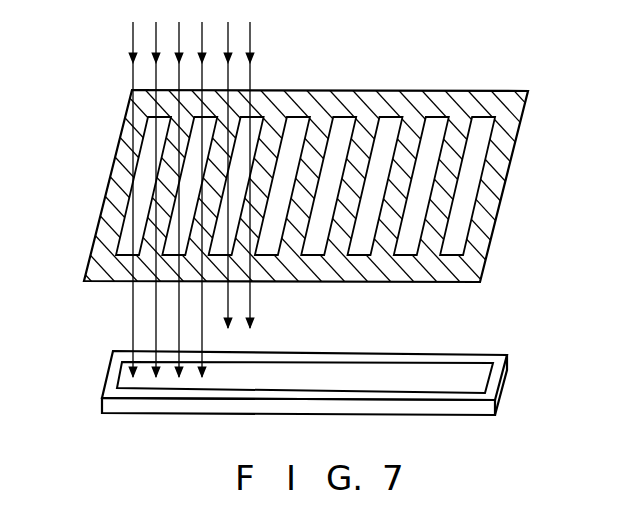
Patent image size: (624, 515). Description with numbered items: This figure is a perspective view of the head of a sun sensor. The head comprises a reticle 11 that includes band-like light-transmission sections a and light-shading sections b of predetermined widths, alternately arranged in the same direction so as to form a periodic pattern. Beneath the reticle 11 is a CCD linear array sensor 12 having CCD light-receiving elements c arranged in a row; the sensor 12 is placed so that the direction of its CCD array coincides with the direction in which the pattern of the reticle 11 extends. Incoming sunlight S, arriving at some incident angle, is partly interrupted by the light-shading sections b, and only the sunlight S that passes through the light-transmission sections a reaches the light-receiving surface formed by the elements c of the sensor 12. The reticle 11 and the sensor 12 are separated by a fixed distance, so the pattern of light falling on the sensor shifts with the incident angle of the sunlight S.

The reticle 11 is at (466, 91).
The CCD linear array sensor 12 is at (499, 385).
The sunlight S is at (191, 188).
The light-transmission section a is at (467, 200).
The light-shading section b is at (457, 155).
The CCD light-receiving element c is at (450, 368).